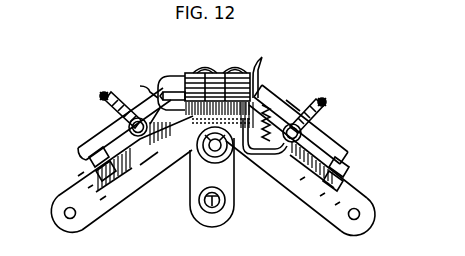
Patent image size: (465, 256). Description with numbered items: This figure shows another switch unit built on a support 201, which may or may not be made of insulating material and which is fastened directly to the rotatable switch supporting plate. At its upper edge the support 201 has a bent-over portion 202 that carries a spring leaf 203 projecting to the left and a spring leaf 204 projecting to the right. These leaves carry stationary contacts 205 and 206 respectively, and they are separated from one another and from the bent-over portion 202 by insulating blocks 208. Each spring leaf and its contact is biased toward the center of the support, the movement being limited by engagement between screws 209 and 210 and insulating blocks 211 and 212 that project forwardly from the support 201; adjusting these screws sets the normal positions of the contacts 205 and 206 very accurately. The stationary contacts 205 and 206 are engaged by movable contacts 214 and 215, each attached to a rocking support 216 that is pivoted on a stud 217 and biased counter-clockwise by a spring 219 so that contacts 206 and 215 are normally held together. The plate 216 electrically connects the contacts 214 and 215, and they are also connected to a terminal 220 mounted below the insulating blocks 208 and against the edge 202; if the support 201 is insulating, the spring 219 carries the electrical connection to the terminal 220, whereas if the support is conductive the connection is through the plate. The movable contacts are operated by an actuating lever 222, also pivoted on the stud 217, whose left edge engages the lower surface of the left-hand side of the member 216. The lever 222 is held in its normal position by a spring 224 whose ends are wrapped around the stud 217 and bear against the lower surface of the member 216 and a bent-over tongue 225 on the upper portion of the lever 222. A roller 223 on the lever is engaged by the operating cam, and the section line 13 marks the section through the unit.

The support 201 is at (53, 201).
The bent-over portion 202 is at (265, 84).
The spring leaf 203 is at (143, 88).
The spring leaf 204 is at (292, 98).
The stationary contact 205 is at (87, 162).
The stationary contact 206 is at (350, 168).
The insulating blocks 208 is at (256, 68).
The screw 209 is at (104, 97).
The screw 210 is at (328, 105).
The insulating block 211 is at (140, 170).
The insulating block 212 is at (297, 171).
The section line 13- 13 is at (215, 42).
The movable contact 214 is at (88, 165).
The movable contact 215 is at (330, 181).
The rocking support 216 is at (110, 193).
The stud 217 is at (195, 158).
The spring 219 is at (236, 156).
The terminal 220 is at (172, 78).
The actuating lever 222 is at (196, 202).
The roller 223 is at (215, 214).
The spring 224 is at (176, 82).
The bent-over tongue 225 is at (204, 70).